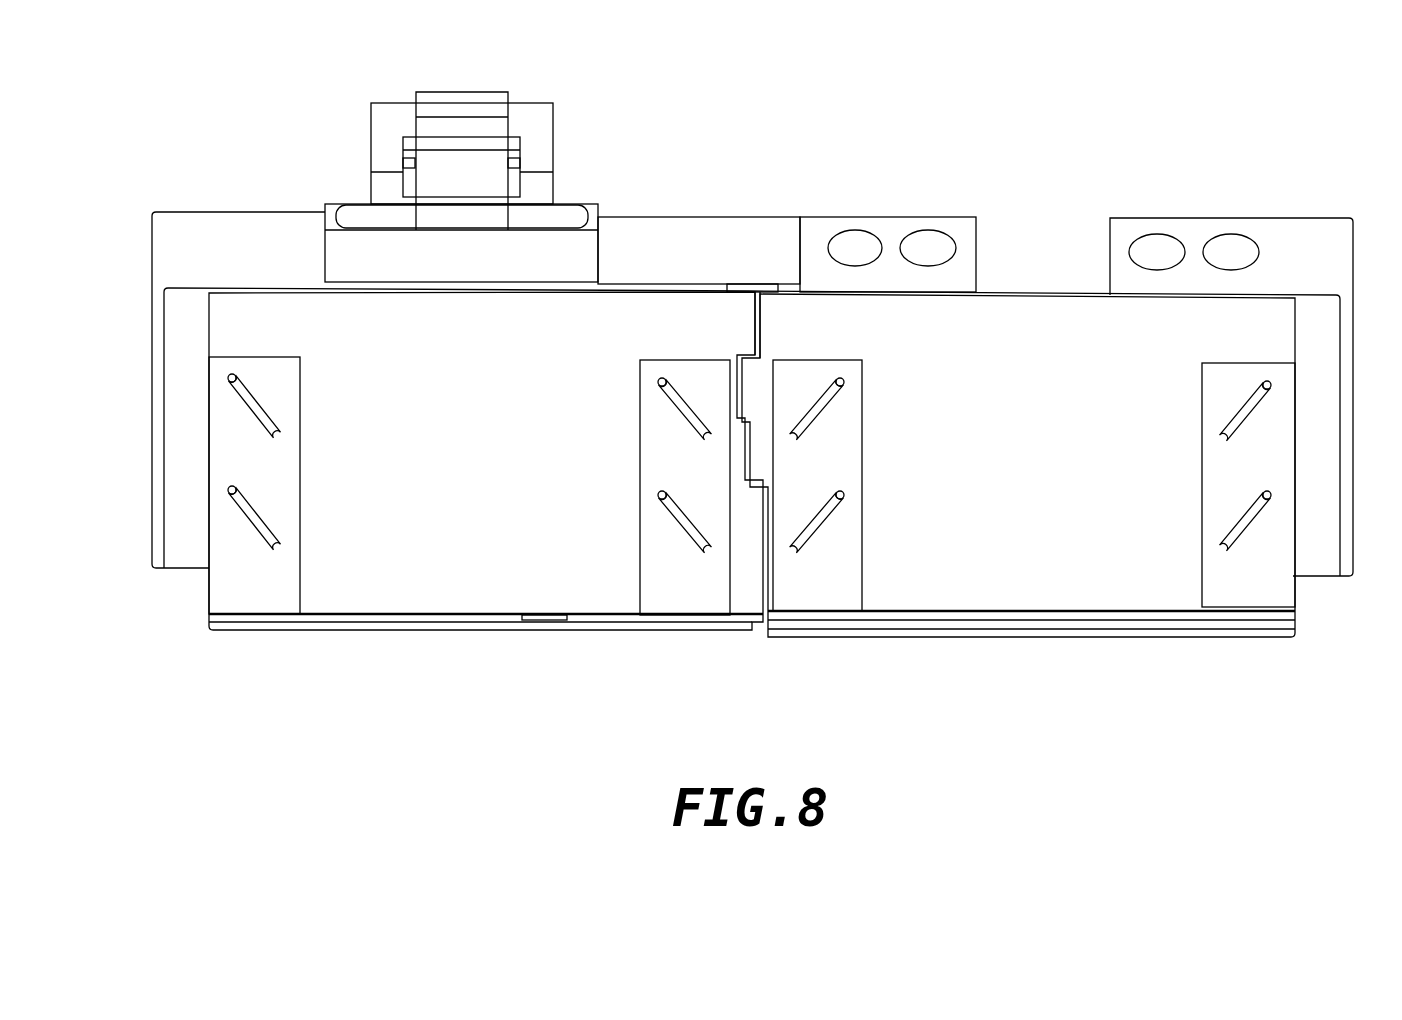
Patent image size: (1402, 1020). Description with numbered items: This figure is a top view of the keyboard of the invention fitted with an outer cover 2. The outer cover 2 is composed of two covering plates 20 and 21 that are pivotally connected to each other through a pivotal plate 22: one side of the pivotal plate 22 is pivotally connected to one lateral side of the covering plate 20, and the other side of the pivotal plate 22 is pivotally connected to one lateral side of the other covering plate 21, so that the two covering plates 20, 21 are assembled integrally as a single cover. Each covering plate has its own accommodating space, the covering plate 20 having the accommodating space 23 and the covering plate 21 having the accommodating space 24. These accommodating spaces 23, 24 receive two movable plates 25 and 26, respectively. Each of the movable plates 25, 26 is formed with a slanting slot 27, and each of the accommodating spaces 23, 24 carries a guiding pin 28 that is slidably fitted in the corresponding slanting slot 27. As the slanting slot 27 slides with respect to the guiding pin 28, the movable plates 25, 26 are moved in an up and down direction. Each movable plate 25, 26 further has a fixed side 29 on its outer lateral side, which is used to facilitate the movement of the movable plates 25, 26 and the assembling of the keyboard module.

The outer cover 2 is at (862, 203).
The covering plate 20 is at (205, 230).
The covering plate 21 is at (1296, 247).
The pivotal plate 22 is at (750, 287).
The accommodating space 23 is at (162, 537).
The accommodating space 24 is at (1332, 568).
The movable plate 25 is at (433, 597).
The movable plate 26 is at (1002, 597).
The slanting slot 27 is at (1232, 540).
The guiding pin 28 is at (232, 490).
The fixed side 29 is at (628, 627).